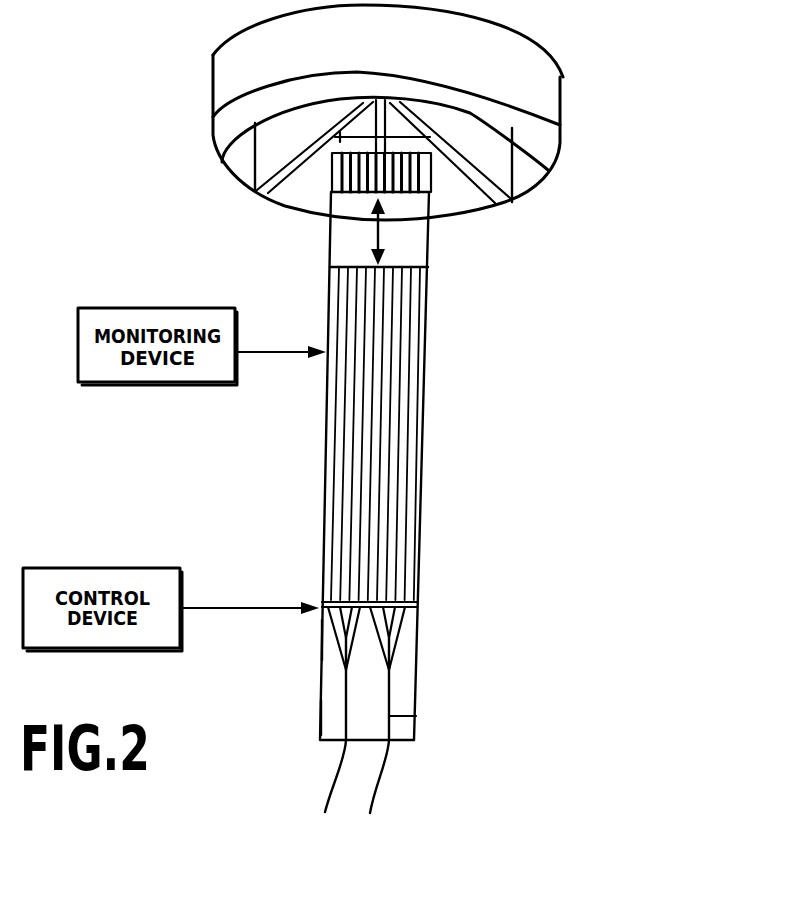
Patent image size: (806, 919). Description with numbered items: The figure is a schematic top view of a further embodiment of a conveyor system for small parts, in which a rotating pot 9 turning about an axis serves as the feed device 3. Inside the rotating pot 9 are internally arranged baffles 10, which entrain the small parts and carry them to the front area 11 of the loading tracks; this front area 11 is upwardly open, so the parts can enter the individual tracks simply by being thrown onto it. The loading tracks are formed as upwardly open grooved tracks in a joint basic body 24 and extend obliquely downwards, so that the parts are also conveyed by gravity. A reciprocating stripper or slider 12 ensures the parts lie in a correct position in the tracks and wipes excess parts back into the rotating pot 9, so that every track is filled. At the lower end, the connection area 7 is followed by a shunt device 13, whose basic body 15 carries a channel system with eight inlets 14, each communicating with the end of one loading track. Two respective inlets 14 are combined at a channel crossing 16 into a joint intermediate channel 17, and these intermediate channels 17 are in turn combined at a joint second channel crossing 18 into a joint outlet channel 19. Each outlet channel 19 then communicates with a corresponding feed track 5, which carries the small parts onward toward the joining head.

The feed device 3 is at (600, 119).
The feed track 5 is at (340, 765).
The connection area 7 is at (298, 596).
The rotating pot 9 is at (520, 68).
The baffles 10 is at (277, 145).
The front area 11 is at (322, 175).
The stripper or slider 12 is at (405, 238).
The shunt device 13 is at (300, 642).
The inlets 14 is at (404, 628).
The basic body 15 is at (320, 705).
The channel crossing 16 is at (405, 647).
The intermediate channel 17 is at (417, 665).
The second channel crossing 18 is at (402, 682).
The outlet channel 19 is at (416, 716).
The basic body 24 is at (425, 388).